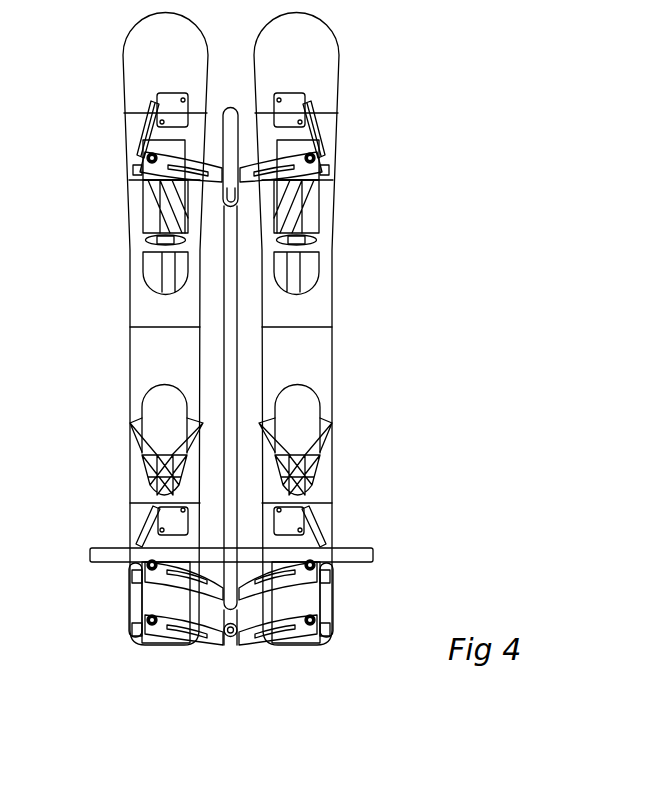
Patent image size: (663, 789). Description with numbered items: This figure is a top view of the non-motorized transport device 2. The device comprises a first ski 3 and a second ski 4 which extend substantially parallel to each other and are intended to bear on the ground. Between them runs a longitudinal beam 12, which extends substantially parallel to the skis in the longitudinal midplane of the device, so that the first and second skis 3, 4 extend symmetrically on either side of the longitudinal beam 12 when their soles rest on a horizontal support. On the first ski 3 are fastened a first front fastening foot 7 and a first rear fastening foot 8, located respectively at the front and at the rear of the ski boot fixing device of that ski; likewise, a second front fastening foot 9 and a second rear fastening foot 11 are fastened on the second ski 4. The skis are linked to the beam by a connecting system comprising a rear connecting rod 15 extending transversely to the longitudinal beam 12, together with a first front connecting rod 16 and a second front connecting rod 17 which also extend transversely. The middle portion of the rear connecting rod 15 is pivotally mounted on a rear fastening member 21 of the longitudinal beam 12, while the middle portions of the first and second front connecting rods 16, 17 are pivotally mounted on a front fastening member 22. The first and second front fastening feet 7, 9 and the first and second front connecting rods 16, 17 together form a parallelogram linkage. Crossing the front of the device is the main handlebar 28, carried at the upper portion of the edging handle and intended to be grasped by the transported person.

The non-motorized transport device 2 is at (374, 332).
The first ski 3 is at (143, 316).
The second ski 4 is at (318, 358).
The first front fastening foot 7 is at (140, 602).
The first rear fastening foot 8 is at (143, 125).
The second front fastening foot 9 is at (332, 613).
The second rear fastening foot 11 is at (322, 123).
The longitudinal beam 12 is at (233, 352).
The rear connecting rod 15 is at (315, 170).
The first front connecting rod 16 is at (323, 590).
The second front connecting rod 17 is at (213, 637).
The rear fastening member 21 is at (220, 193).
The front fastening member 22 is at (233, 615).
The main handlebar 28 is at (108, 553).